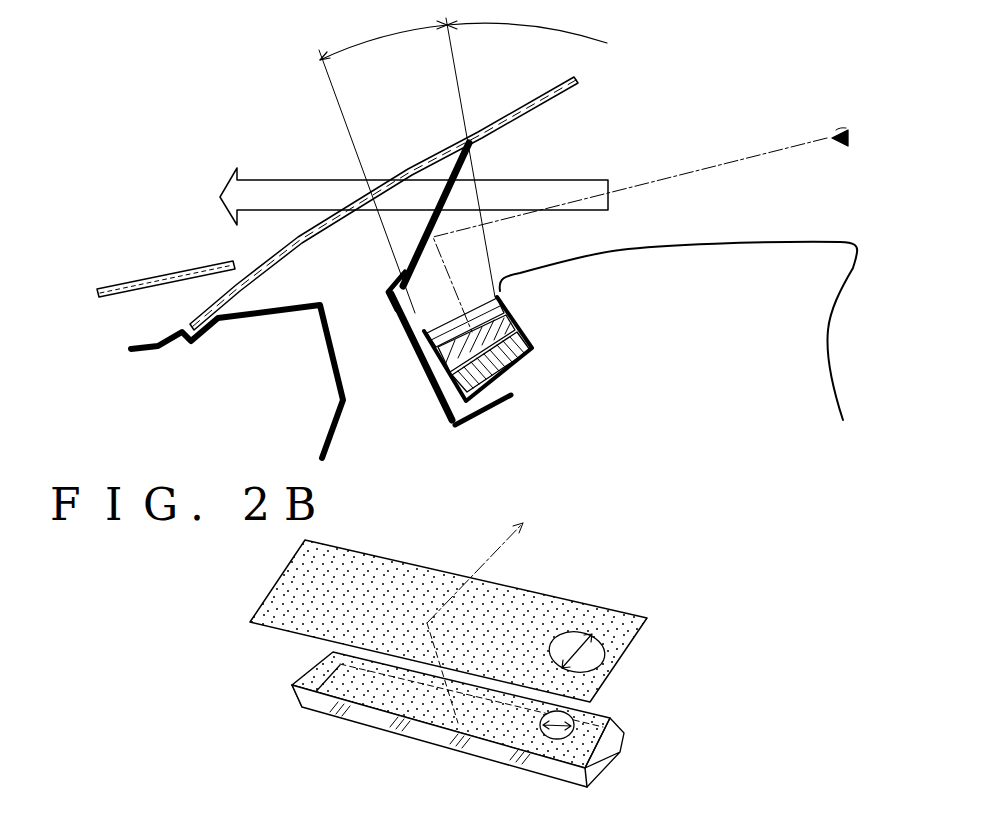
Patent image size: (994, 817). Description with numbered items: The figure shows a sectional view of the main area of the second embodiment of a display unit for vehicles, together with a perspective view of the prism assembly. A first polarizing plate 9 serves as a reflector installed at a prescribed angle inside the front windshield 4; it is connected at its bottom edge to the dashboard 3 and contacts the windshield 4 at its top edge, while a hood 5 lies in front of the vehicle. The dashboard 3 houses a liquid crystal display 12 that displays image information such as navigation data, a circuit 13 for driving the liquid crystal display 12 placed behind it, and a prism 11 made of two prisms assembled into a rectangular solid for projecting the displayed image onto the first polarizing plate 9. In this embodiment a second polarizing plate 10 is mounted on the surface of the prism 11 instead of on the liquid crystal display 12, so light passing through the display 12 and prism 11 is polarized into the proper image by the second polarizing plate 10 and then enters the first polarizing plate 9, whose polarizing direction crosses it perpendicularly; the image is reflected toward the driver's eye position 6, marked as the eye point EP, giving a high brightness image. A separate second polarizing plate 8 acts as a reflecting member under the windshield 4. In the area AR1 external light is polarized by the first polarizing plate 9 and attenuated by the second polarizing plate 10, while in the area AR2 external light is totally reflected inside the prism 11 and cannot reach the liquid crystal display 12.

In FIG. 2A, the dashboard 3 is at (503, 400).
In FIG. 2A, the front windshield 4 is at (543, 92).
In FIG. 2A, the hood 5 is at (191, 265).
In FIG. 2A, the eye position 6 is at (840, 127).
In FIG. 2A, the second polarizing plate 8 is at (735, 240).
In FIG. 2A, the first polarizing plate 9 is at (470, 175).
In FIG. 2B, the first polarizing plate 9 is at (565, 607).
In FIG. 2A, the second polarizing plate 10 is at (420, 343).
In FIG. 2B, the second polarizing plate 10 is at (598, 712).
In FIG. 2A, the prism 11 is at (507, 308).
In FIG. 2B, the prism 11 is at (613, 722).
In FIG. 2A, the liquid crystal display 12 is at (522, 327).
In FIG. 2B, the liquid crystal display 12 is at (535, 767).
In FIG. 2A, the circuit for driving liquid crystal display 13 is at (537, 352).
In FIG. 2B, the eye point EP is at (475, 612).
In FIG. 2A, the area where external incident light is limited by the first polarizing plate AR1 is at (390, 32).
In FIG. 2A, the area where external incident light is limited by the prism AR2 is at (555, 32).